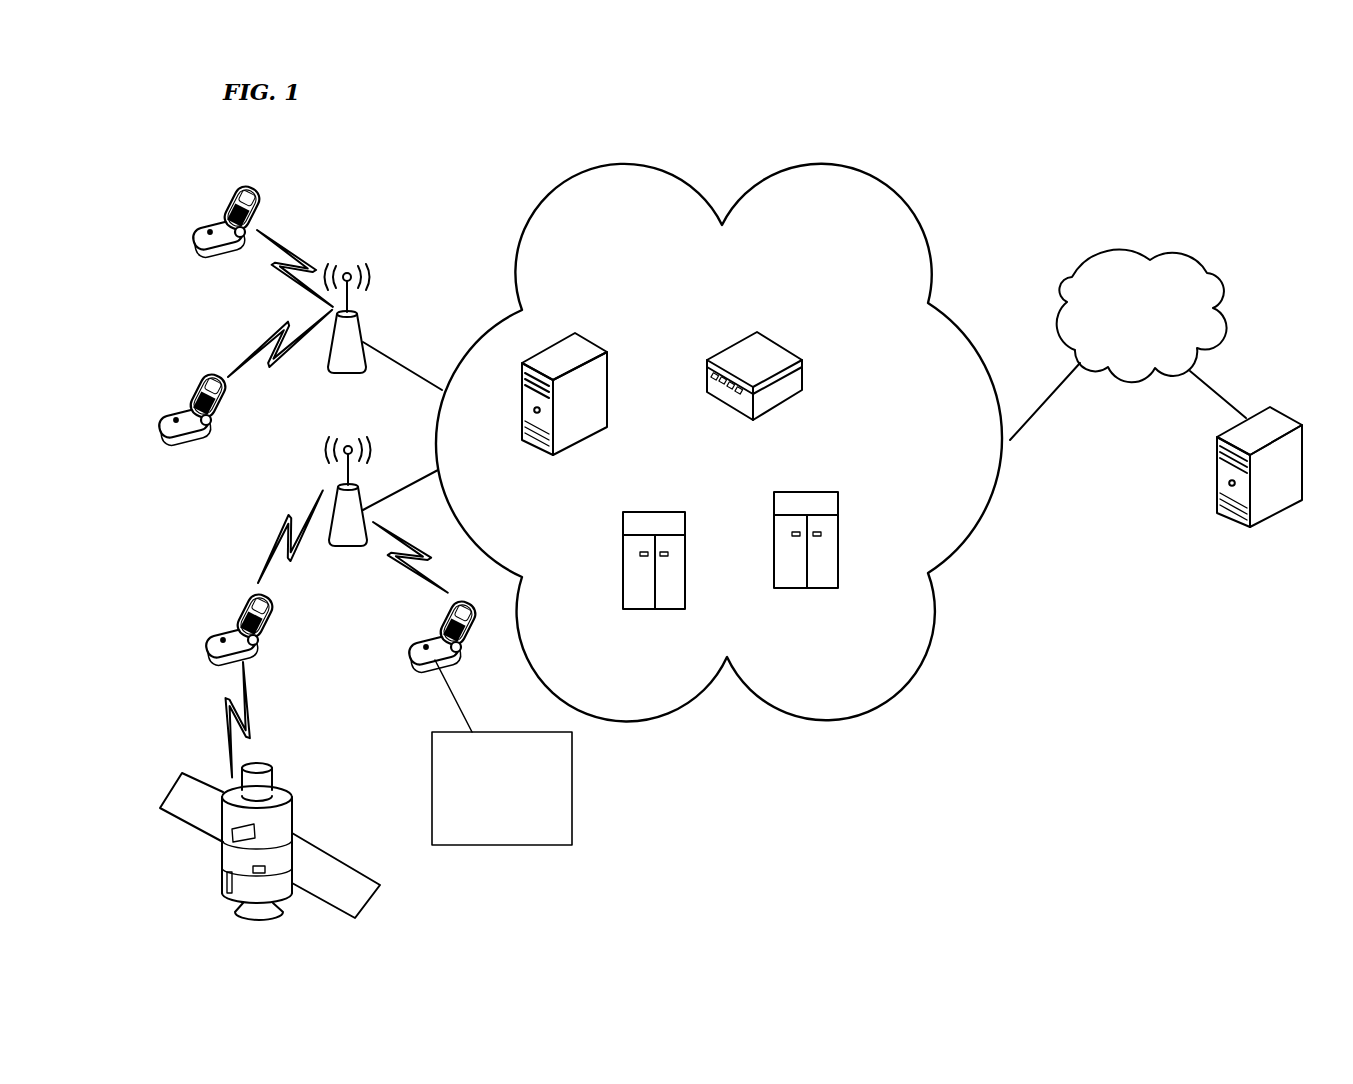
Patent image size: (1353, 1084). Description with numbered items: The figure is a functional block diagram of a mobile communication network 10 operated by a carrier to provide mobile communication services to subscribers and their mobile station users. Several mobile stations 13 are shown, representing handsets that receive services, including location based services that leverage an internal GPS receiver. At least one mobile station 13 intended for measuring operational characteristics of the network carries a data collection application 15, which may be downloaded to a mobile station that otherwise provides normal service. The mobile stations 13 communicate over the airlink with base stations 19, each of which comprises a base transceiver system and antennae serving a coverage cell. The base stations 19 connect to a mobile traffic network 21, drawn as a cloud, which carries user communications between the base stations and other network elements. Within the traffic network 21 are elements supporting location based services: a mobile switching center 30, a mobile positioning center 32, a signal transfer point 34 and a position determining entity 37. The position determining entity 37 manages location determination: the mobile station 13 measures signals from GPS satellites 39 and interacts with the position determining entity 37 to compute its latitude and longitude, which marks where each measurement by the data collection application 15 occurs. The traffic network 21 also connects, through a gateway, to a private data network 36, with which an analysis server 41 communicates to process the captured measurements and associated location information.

The mobile communication network 10 is at (414, 119).
The mobile station 13 is at (262, 207).
The data collection application 15 is at (567, 782).
The base station 19 is at (353, 308).
The mobile traffic network 21 is at (881, 267).
The mobile switching center 30 is at (585, 432).
The mobile positioning center 32 is at (707, 367).
The signal transfer point 34 is at (773, 527).
The private data network 36 is at (1070, 277).
The position determining entity 37 is at (622, 547).
The GPS satellite 39 is at (270, 860).
The analysis server 41 is at (1272, 416).